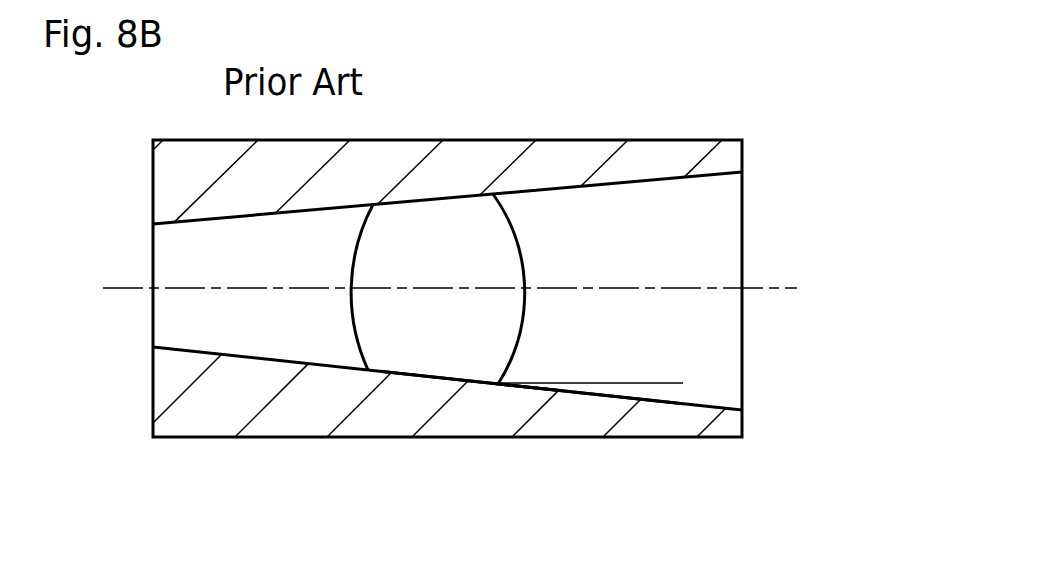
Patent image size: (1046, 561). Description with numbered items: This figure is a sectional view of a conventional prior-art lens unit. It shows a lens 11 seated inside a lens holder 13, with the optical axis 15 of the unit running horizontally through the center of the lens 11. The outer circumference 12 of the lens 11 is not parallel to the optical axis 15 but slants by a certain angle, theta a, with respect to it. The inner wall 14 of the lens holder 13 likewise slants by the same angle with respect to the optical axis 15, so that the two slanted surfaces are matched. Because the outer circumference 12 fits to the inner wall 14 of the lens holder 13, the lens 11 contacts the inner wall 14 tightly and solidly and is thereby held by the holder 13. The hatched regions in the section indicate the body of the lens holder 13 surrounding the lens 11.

The lens 11 is at (418, 333).
The outer circumference 12 is at (450, 382).
The lens holder 13 is at (583, 422).
The inner wall 14 is at (713, 172).
The optical axis 15 is at (128, 288).